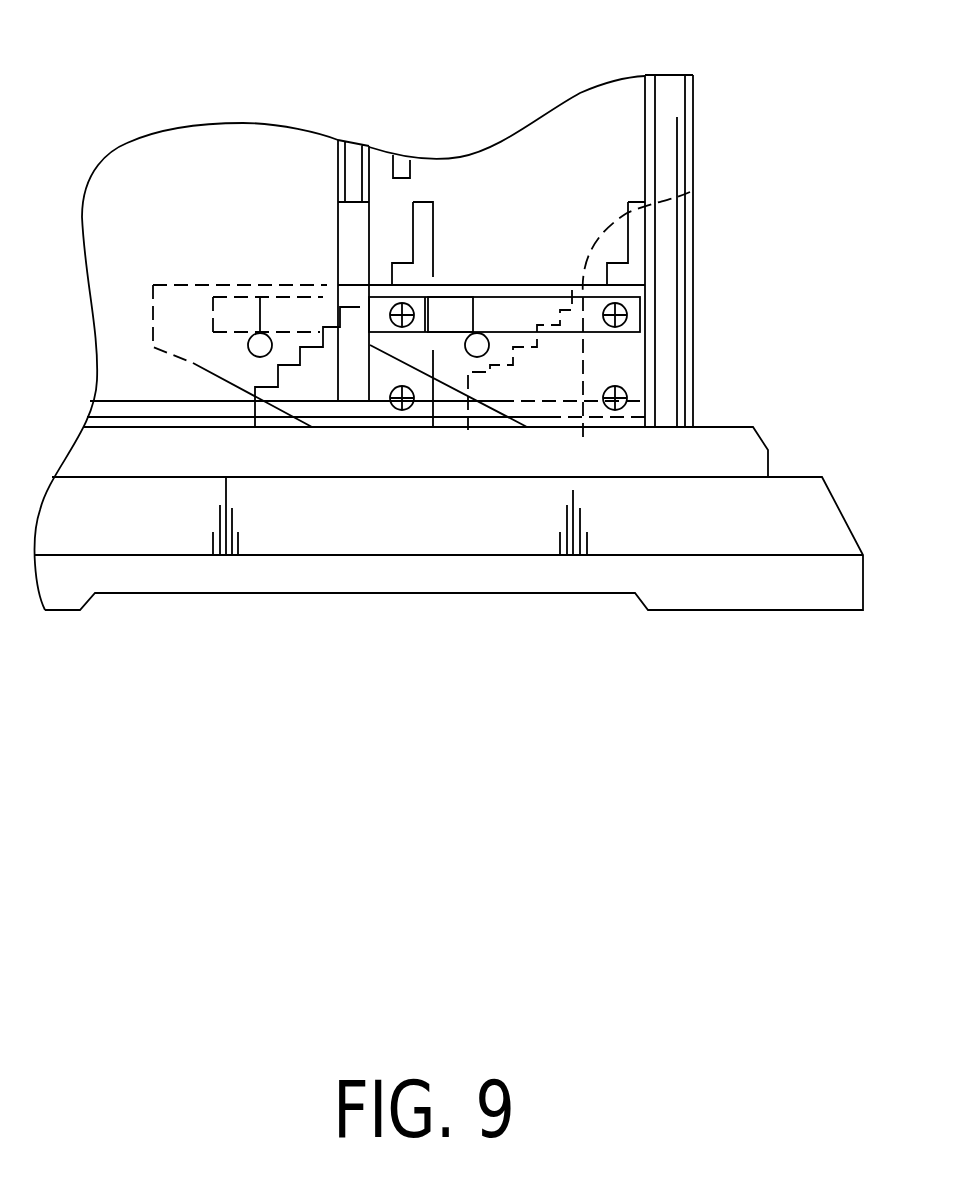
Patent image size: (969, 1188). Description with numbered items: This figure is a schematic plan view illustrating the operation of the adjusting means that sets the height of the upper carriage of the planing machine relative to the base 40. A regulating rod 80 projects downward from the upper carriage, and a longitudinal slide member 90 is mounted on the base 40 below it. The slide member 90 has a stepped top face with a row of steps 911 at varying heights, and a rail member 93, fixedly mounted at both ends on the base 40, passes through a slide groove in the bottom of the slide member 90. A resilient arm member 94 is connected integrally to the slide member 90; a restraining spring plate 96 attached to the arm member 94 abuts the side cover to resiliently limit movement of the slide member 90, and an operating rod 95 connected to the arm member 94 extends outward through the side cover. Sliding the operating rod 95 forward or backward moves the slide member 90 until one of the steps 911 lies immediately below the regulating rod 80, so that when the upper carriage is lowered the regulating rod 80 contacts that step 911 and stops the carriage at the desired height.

The base 40 is at (730, 622).
The regulating rod 80 is at (417, 160).
The slide member 90 is at (560, 367).
The steps 911 is at (707, 182).
The rail member 93 is at (172, 408).
The resilient arm member 94 is at (633, 313).
The operating rod 95 is at (477, 357).
The restraining spring plate 96 is at (473, 298).